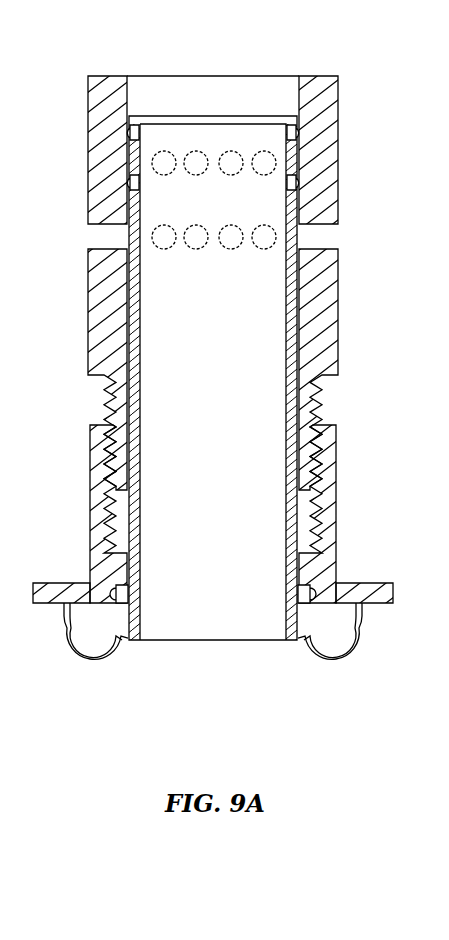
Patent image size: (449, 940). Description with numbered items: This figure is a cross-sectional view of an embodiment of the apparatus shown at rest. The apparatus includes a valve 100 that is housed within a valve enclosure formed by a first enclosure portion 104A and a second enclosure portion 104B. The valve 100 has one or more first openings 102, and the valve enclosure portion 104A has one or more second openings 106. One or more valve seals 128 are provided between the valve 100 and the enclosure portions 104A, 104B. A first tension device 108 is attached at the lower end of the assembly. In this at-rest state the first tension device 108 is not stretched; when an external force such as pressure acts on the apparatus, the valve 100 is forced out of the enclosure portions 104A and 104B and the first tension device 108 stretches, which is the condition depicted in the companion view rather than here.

The valve 100 is at (260, 117).
The first openings 102 is at (264, 150).
The first enclosure portion 104A is at (297, 93).
The second enclosure portion 104B is at (336, 455).
The second openings 106 is at (164, 250).
The first tension device 108 is at (306, 650).
The valve seals 128 is at (301, 133).